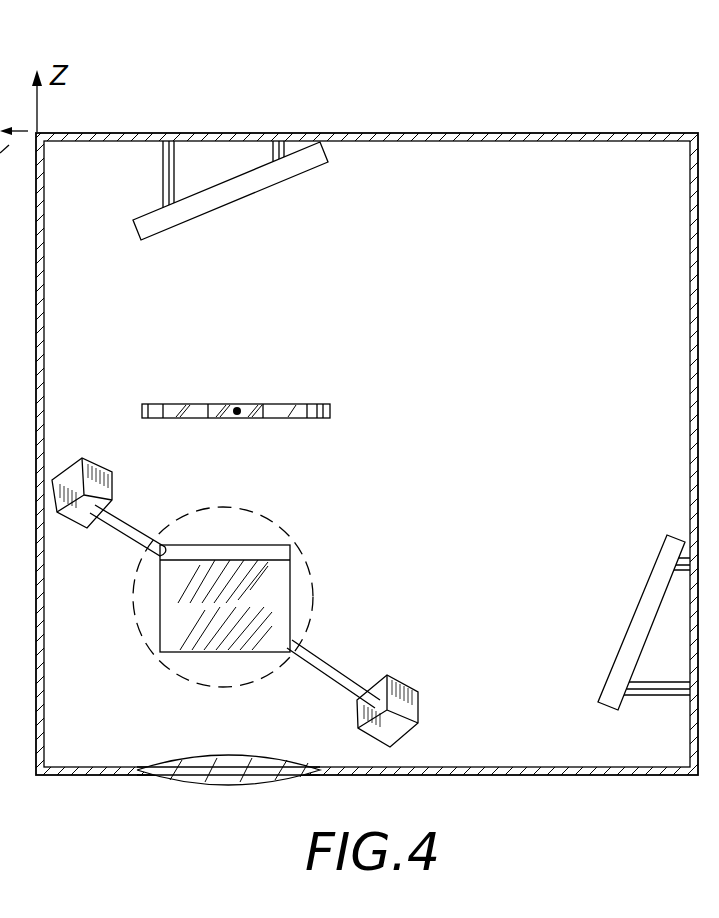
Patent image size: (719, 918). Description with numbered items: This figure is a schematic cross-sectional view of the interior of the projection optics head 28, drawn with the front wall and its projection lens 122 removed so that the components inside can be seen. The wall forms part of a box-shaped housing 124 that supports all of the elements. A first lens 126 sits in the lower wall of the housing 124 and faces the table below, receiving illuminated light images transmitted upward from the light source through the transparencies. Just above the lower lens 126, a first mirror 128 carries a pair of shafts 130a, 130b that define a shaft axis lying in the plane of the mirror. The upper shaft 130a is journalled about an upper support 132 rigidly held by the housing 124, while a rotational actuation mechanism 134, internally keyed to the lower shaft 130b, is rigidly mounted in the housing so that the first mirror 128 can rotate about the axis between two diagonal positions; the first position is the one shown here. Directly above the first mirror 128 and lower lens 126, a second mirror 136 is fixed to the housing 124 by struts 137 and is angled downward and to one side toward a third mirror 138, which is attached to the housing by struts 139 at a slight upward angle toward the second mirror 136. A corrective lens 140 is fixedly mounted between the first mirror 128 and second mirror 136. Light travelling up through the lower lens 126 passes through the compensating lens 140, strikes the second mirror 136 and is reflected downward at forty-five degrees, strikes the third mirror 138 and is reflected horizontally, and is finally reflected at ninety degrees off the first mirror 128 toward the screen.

The projection optics head 28 is at (375, 108).
The box-shaped housing 124 is at (214, 129).
The first lens 126 is at (200, 781).
The first mirror 128 is at (253, 545).
The projection lens 122 is at (318, 577).
The upper shaft 130a is at (130, 517).
The lower shaft 130b is at (340, 667).
The upper support 132 is at (103, 468).
The rotational actuation mechanism 134 is at (422, 703).
The second mirror 136 is at (278, 188).
The struts 137 is at (163, 172).
The third mirror 138 is at (650, 563).
The struts 139 is at (658, 697).
The corrective lens 140 is at (285, 404).